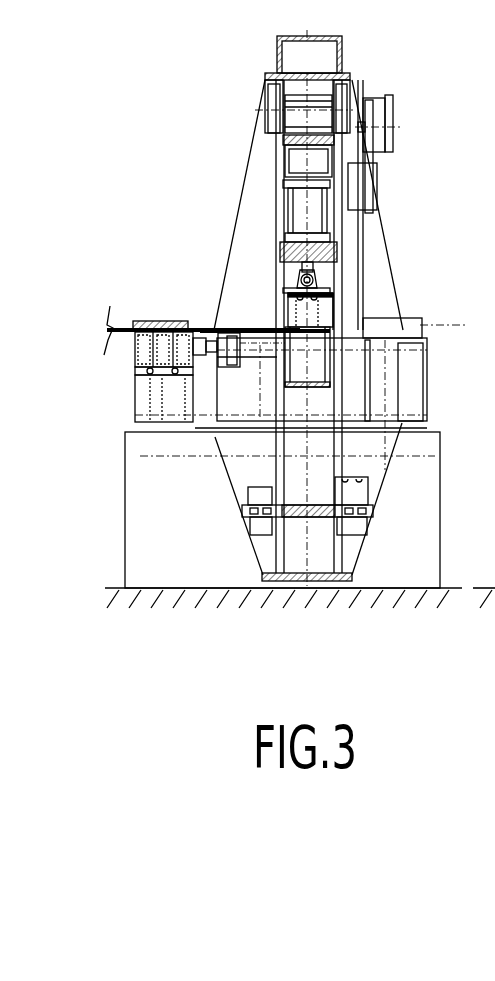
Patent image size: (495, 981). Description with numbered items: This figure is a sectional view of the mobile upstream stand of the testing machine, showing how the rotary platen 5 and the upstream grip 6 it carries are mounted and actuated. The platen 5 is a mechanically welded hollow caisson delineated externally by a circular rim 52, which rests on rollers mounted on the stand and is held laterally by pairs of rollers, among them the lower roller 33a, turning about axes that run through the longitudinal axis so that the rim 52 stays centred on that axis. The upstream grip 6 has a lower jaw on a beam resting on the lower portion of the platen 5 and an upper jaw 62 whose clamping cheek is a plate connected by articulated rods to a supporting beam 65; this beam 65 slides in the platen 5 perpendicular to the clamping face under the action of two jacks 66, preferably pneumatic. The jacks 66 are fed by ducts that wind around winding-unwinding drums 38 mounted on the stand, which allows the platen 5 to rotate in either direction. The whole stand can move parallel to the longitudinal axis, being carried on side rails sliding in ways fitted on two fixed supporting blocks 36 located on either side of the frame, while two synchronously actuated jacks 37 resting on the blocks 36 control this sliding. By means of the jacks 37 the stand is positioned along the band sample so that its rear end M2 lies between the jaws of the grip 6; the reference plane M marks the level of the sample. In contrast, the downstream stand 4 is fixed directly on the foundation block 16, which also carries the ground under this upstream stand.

The winding-unwinding drum 38 is at (386, 117).
The rotary platen 5 is at (282, 207).
The downstream stand 4 is at (243, 235).
The jack 66 is at (313, 207).
The supporting beam 65 is at (330, 257).
The upper jaw 62 is at (310, 286).
The upstream grip 6 is at (345, 304).
The machine table plane M is at (123, 320).
The jack 37 is at (185, 325).
The rear end of the band sample M2 is at (300, 322).
The fixed supporting block 36 is at (177, 408).
The foundation block 16 is at (232, 590).
The circular rim 52 is at (316, 518).
The lower roller 33a is at (373, 512).